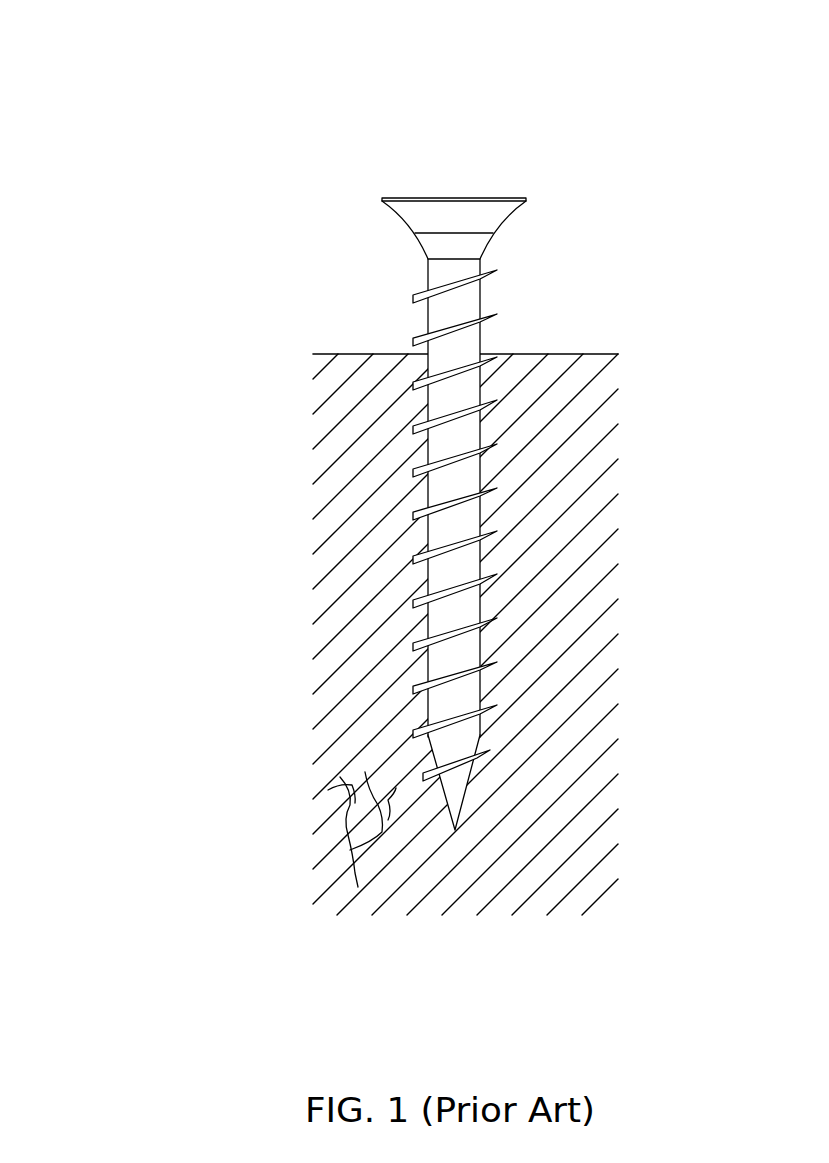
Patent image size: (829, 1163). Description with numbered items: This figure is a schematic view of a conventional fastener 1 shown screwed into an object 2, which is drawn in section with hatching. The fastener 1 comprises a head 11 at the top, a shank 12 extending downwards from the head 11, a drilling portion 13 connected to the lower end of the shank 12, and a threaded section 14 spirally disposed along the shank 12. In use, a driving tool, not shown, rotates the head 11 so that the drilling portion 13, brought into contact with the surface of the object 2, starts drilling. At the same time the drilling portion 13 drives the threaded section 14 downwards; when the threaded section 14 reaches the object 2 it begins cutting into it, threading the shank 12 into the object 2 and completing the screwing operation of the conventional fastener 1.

The conventional fastener 1 is at (168, 117).
The object 2 is at (618, 354).
The head 11 is at (502, 210).
The shank 12 is at (422, 313).
The drilling portion 13 is at (463, 782).
The threaded section 14 is at (483, 618).